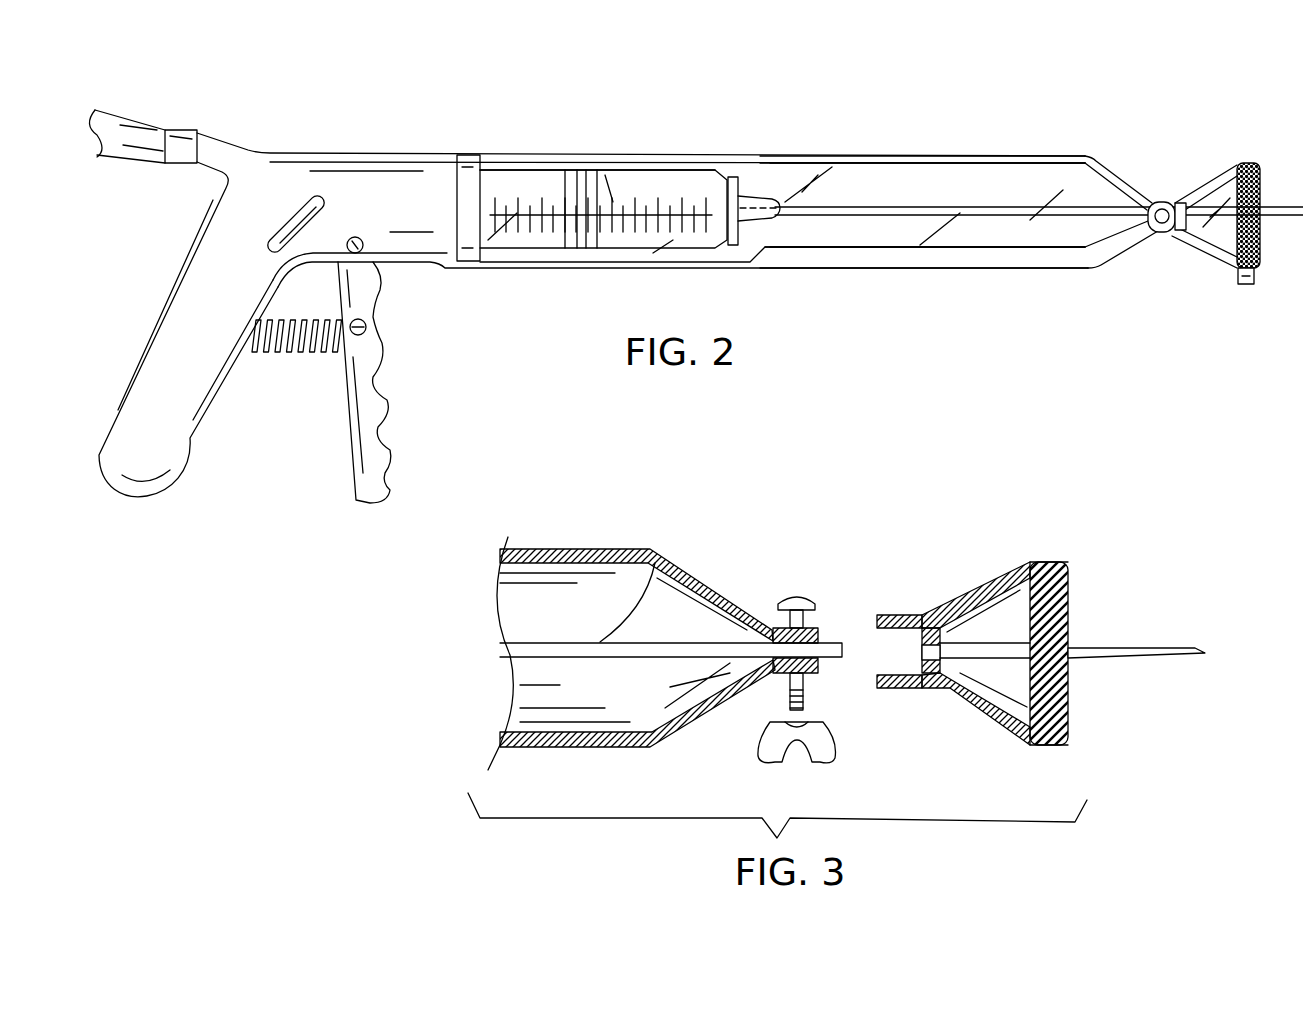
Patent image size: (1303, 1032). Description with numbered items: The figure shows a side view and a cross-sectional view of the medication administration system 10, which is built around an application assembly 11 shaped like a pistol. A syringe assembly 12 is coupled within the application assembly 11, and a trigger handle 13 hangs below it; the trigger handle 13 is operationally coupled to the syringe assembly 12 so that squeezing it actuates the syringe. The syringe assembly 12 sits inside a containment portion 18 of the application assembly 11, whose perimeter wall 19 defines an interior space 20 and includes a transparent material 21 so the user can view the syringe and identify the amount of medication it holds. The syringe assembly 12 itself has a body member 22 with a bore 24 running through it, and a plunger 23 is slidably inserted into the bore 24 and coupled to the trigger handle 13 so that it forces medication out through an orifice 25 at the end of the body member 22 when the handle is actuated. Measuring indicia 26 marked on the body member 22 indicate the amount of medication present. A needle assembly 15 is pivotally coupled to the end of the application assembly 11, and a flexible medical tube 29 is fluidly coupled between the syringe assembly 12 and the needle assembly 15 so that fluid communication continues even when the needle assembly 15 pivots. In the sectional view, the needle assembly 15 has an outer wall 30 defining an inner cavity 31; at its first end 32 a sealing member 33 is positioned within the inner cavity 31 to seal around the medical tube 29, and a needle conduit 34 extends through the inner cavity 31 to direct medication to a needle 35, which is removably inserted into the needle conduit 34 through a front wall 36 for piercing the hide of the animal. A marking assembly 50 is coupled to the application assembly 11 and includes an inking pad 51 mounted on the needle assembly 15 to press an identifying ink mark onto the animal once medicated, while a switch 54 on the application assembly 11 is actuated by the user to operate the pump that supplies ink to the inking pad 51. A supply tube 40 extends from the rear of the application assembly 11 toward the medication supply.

In FIG. 2, the medication administration system 10 is at (808, 328).
In FIG. 2, the application assembly 11 is at (1030, 126).
In FIG. 2, the syringe assembly 12 is at (540, 120).
In FIG. 2, the trigger handle 13 is at (178, 383).
In FIG. 3, the needle assembly 15 is at (1123, 605).
In FIG. 2, the containment portion 18 is at (960, 185).
In FIG. 2, the perimeter wall 19 is at (852, 160).
In FIG. 2, the interior space 20 is at (892, 190).
In FIG. 2, the transparent material 21 is at (781, 158).
In FIG. 2, the body member 22 is at (648, 185).
In FIG. 2, the plunger 23 is at (588, 250).
In FIG. 2, the bore 24 is at (622, 180).
In FIG. 2, the orifice 25 is at (750, 205).
In FIG. 2, the measuring indicia 26 is at (540, 186).
In FIG. 2, the flexible medical tube 29 is at (1108, 213).
In FIG. 3, the flexible medical tube 29 is at (631, 643).
In FIG. 3, the outer wall 30 is at (968, 617).
In FIG. 3, the inner cavity 31 is at (1007, 620).
In FIG. 3, the first end 32 is at (870, 610).
In FIG. 3, the sealing member 33 is at (890, 650).
In FIG. 3, the needle conduit 34 is at (935, 617).
In FIG. 3, the needle 35 is at (1167, 652).
In FIG. 3, the front wall 36 is at (1070, 592).
In FIG. 2, the supply tube 40 is at (122, 131).
In FIG. 2, the marking assembly 50 is at (1256, 300).
In FIG. 2, the inking pad 51 is at (1258, 168).
In FIG. 2, the switch 54 is at (287, 220).